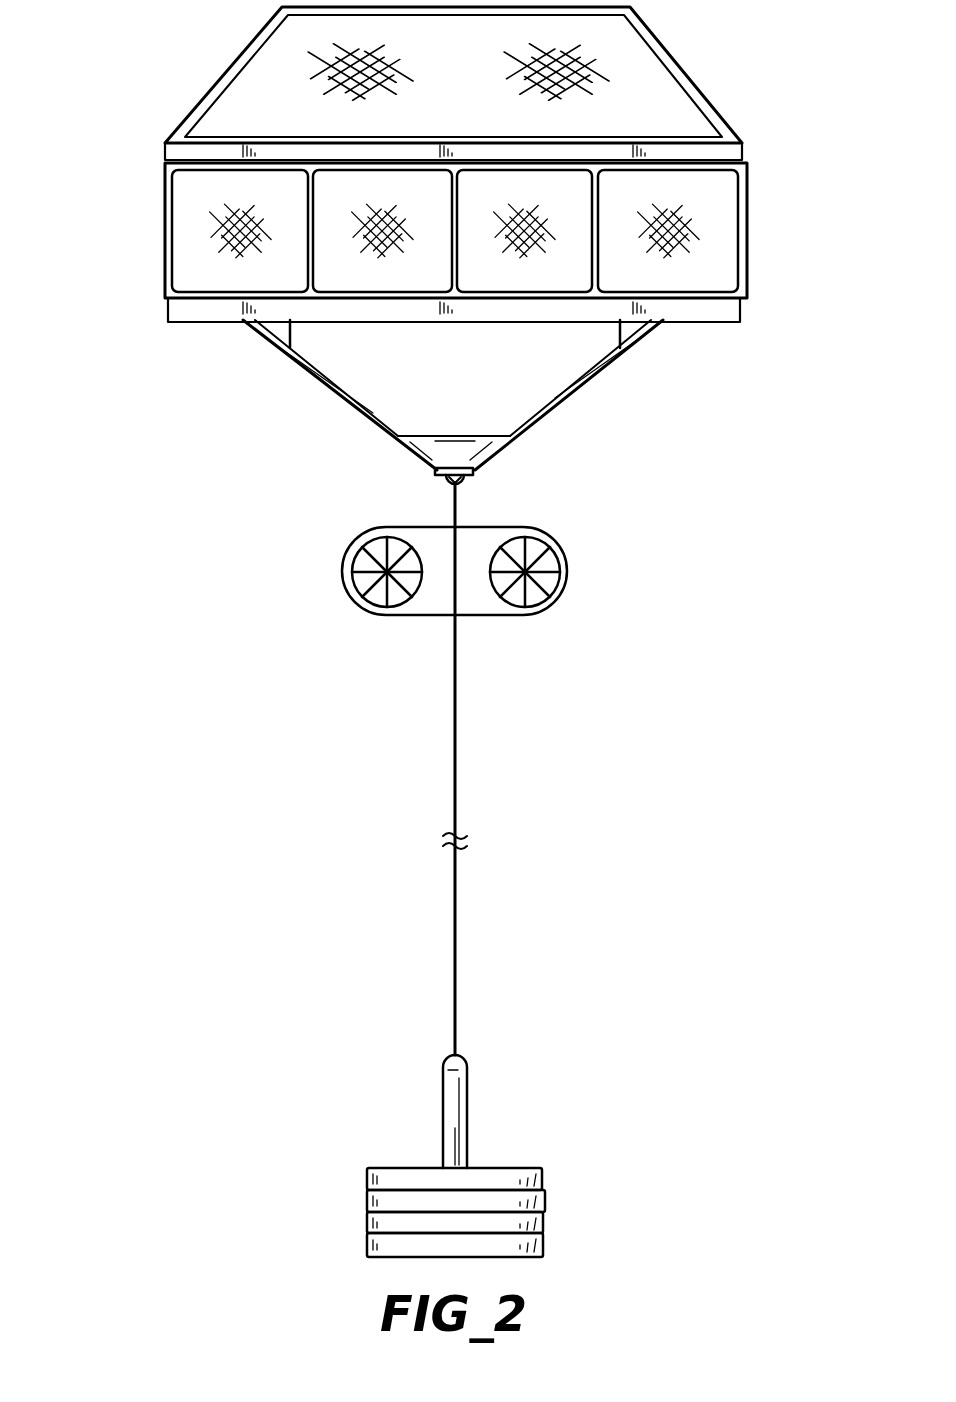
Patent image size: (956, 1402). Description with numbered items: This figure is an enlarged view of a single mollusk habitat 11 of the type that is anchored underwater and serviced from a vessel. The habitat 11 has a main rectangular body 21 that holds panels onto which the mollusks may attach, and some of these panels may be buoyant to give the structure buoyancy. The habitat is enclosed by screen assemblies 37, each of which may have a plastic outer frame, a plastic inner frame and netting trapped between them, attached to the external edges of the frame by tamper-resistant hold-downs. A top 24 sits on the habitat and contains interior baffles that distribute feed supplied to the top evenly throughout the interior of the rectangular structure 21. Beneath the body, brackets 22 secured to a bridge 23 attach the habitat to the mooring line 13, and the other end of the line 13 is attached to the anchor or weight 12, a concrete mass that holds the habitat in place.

The habitat 11 is at (148, 263).
The concrete mass 12 is at (503, 1178).
The mooring line 13 is at (452, 970).
The main rectangular body 21 is at (180, 153).
The brackets 22 is at (558, 398).
The bridge 23 is at (380, 310).
The top 24 is at (700, 88).
The screen assemblies 37 is at (692, 237).